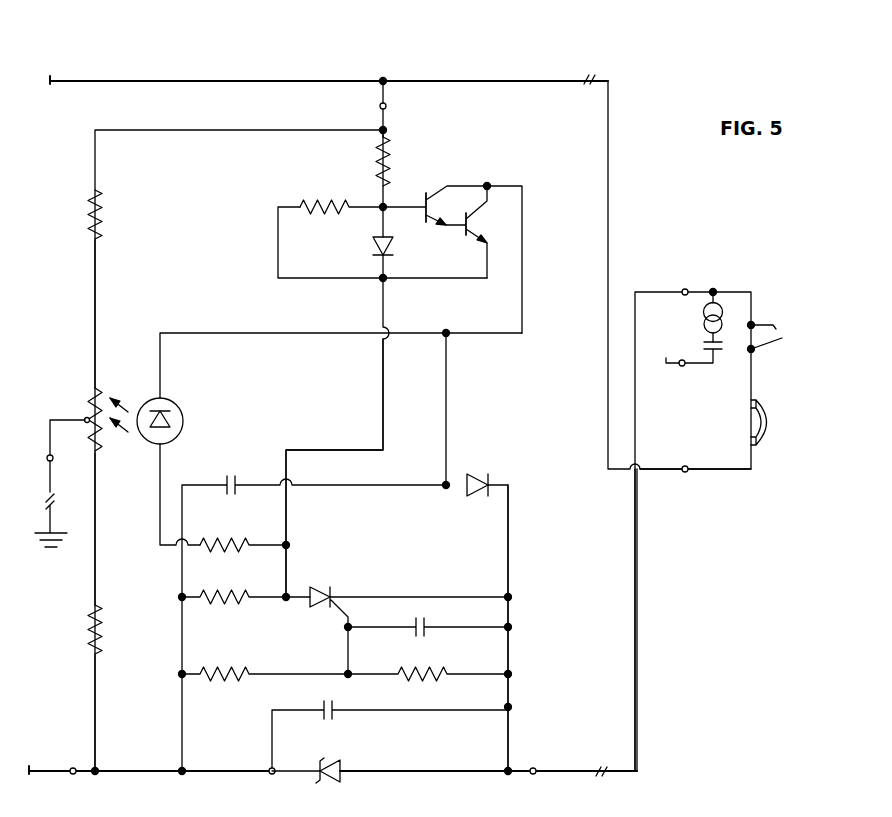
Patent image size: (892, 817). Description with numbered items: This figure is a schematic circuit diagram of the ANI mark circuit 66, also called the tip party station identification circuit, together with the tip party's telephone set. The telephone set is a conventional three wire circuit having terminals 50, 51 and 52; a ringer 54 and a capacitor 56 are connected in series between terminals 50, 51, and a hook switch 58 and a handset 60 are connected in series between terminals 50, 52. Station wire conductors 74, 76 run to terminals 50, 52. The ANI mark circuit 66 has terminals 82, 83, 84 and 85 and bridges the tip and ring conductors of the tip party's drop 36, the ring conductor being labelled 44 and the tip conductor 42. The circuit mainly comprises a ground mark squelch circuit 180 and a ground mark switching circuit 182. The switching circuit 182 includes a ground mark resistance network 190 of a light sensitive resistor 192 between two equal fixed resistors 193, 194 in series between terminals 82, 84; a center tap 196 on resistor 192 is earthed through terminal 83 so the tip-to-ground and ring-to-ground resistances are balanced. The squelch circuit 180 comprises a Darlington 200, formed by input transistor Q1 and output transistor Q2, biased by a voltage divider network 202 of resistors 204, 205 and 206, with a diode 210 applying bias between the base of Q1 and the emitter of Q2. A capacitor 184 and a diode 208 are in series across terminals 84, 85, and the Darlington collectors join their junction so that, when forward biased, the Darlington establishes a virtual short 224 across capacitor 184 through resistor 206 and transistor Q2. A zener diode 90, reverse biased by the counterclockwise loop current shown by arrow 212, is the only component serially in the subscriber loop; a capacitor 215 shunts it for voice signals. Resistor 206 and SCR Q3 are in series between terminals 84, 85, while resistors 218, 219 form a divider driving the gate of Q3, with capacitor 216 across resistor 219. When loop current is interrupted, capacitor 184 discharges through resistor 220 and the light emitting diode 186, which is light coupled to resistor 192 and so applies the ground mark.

The tip party's drop 36 is at (242, 68).
The ring conductor 44 is at (310, 81).
The ANI mark circuit 66 is at (456, 57).
The terminal 82 is at (388, 106).
The resistor 204 is at (393, 160).
The voltage divider network 202 is at (300, 194).
The resistor 205 is at (342, 196).
The diode 210 is at (373, 248).
The Darlington 200 is at (524, 198).
The input transistor Q1 is at (426, 219).
The output transistor Q2 is at (465, 236).
The ground mark squelch circuit 180 is at (505, 165).
The ground mark resistance network 190 is at (102, 280).
The resistor 193 is at (104, 211).
The light sensitive resistor 192 is at (92, 392).
The center tap 196 is at (85, 420).
The terminal 83 is at (53, 461).
The resistor 194 is at (90, 640).
The light emitting diode 186 is at (183, 420).
The virtual short 224 is at (323, 450).
The capacitor 184 is at (226, 492).
The diode 208 is at (478, 476).
The resistor 220 is at (220, 552).
The resistor 206 is at (228, 604).
The SCR Q3 is at (312, 585).
The capacitor 216 is at (425, 624).
The resistor 218 is at (235, 668).
The resistor 219 is at (432, 668).
The capacitor 215 is at (340, 712).
The zener diode 90 is at (338, 780).
The ground mark switching circuit 182 is at (528, 560).
The arrow 212 is at (603, 722).
The terminal 85 is at (533, 775).
The terminal 84 is at (75, 776).
The tip conductor 42 is at (53, 776).
The conductor 74 is at (662, 291).
The terminal 50 is at (687, 290).
The ringer 54 is at (703, 312).
The capacitor 56 is at (704, 347).
The terminal 51 is at (684, 366).
The hook switch 58 is at (784, 336).
The handset 60 is at (770, 420).
The terminal 52 is at (686, 472).
The conductor 76 is at (662, 472).